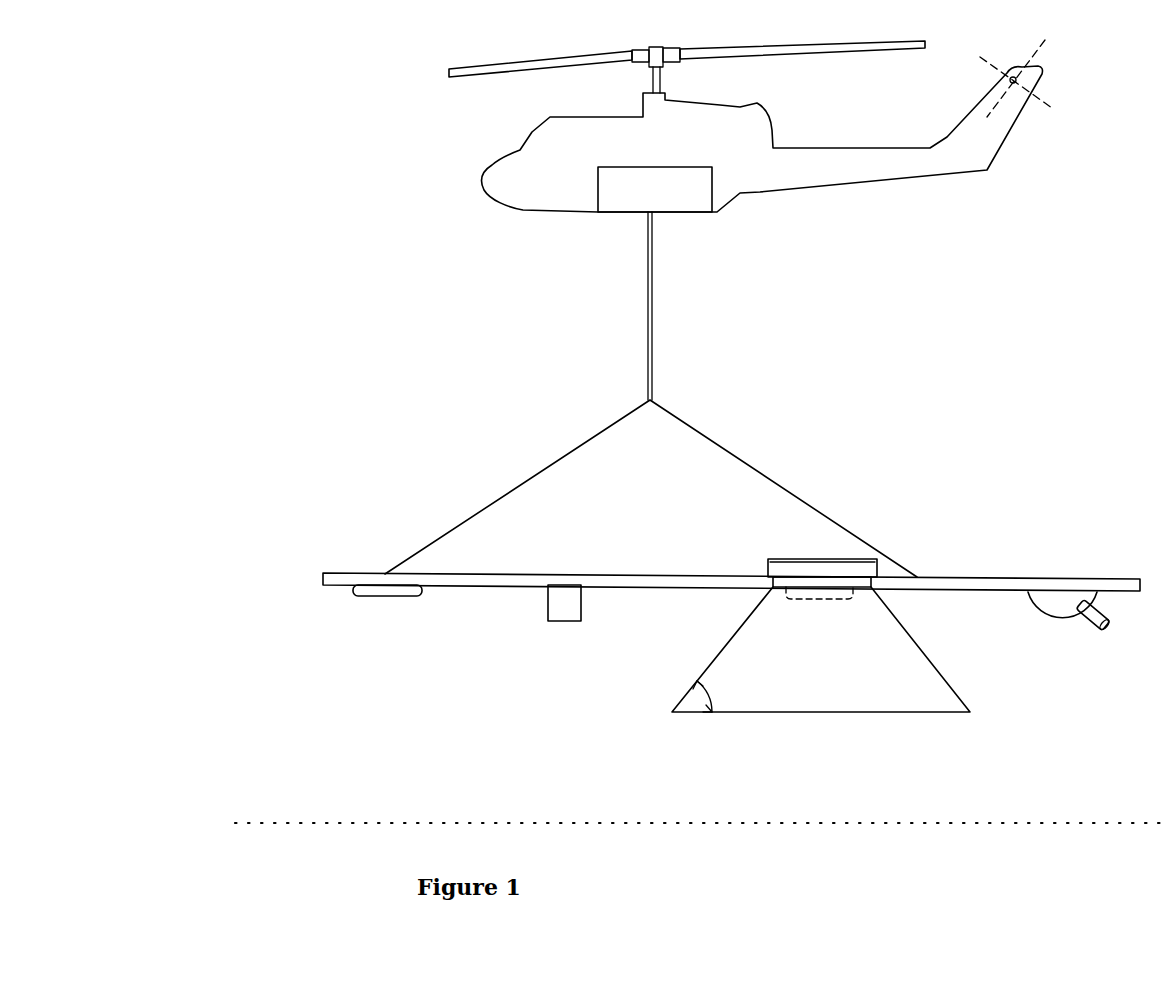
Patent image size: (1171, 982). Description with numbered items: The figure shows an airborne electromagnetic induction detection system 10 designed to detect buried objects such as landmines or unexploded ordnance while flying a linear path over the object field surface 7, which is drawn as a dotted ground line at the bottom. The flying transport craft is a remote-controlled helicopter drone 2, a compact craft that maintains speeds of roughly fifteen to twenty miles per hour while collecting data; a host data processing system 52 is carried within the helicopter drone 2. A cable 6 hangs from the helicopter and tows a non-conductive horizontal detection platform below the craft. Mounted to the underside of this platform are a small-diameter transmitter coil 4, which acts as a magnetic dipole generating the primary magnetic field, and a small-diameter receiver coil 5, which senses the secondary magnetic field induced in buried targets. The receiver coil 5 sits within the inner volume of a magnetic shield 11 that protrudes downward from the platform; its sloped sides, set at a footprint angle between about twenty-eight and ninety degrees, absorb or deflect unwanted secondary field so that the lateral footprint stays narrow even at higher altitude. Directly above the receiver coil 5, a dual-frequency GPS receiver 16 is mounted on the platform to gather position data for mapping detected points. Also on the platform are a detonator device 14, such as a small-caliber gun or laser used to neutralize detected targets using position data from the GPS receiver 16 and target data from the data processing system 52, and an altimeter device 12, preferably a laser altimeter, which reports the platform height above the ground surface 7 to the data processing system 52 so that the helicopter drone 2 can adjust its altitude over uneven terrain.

The airborne EMI detection system 10 is at (343, 203).
The remote-controlled helicopter drone 2 is at (780, 192).
The host data processing system 52 is at (655, 189).
The cable 6 is at (654, 305).
The dual-frequency GPS receiver 16 is at (802, 559).
The receiver coil 5 is at (813, 600).
The magnetic shield 11 is at (917, 643).
The transmitter coil 4 is at (380, 597).
The altimeter device 12 is at (548, 608).
The detonator device 14 is at (1052, 619).
The object field surface 7 is at (350, 822).